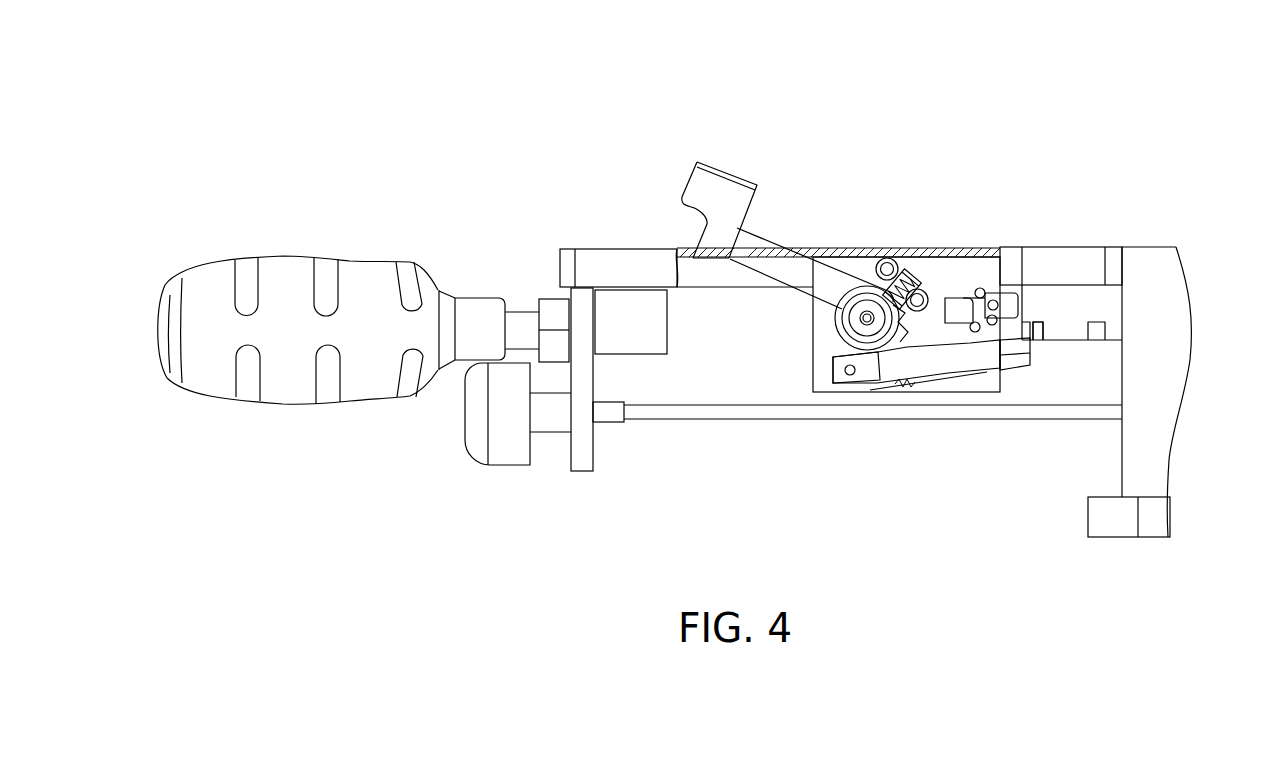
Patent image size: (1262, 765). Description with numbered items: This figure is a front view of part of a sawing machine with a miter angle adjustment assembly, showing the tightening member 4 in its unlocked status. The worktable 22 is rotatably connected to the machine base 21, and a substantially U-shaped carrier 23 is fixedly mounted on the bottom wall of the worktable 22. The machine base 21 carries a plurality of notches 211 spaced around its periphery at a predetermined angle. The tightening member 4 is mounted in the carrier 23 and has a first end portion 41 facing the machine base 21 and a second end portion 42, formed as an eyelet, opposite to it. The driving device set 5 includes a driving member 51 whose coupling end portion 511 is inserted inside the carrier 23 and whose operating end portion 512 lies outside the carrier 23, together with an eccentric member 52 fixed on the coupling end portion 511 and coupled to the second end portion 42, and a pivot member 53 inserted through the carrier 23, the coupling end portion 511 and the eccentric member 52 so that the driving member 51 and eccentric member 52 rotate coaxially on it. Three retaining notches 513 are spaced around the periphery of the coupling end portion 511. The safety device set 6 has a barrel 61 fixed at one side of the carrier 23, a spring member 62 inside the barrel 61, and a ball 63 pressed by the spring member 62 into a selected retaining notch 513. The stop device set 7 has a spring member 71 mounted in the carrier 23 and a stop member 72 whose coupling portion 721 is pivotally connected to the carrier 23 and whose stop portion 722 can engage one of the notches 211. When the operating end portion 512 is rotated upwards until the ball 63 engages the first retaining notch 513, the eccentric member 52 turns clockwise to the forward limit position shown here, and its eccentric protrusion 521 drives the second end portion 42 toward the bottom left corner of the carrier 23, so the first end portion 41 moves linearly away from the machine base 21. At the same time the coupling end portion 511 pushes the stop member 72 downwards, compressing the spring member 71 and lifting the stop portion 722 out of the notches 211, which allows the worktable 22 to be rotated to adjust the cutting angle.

The tightening member 4 is at (951, 290).
The first end portion 41 is at (1010, 285).
The second end portion 42 is at (925, 345).
The driving device set 5 is at (780, 304).
The driving member 51 is at (757, 273).
The coupling end portion 511 is at (893, 320).
The operating end portion 512 is at (698, 192).
The retaining notches 513 is at (862, 305).
The eccentric member 52 is at (868, 350).
The eccentric protrusion 521 is at (958, 345).
The pivot member 53 is at (862, 315).
The safety device set 6 is at (894, 222).
The barrel 61 is at (890, 258).
The spring member 62 is at (916, 289).
The ball 63 is at (893, 280).
The stop device set 7 is at (948, 440).
The spring member 71 is at (947, 385).
The stop member 72 is at (1002, 377).
The coupling portion 721 is at (825, 377).
The stop portion 722 is at (1023, 352).
The machine base 21 is at (1090, 285).
The notches 211 is at (1038, 333).
The worktable 22 is at (1058, 248).
The carrier 23 is at (813, 342).